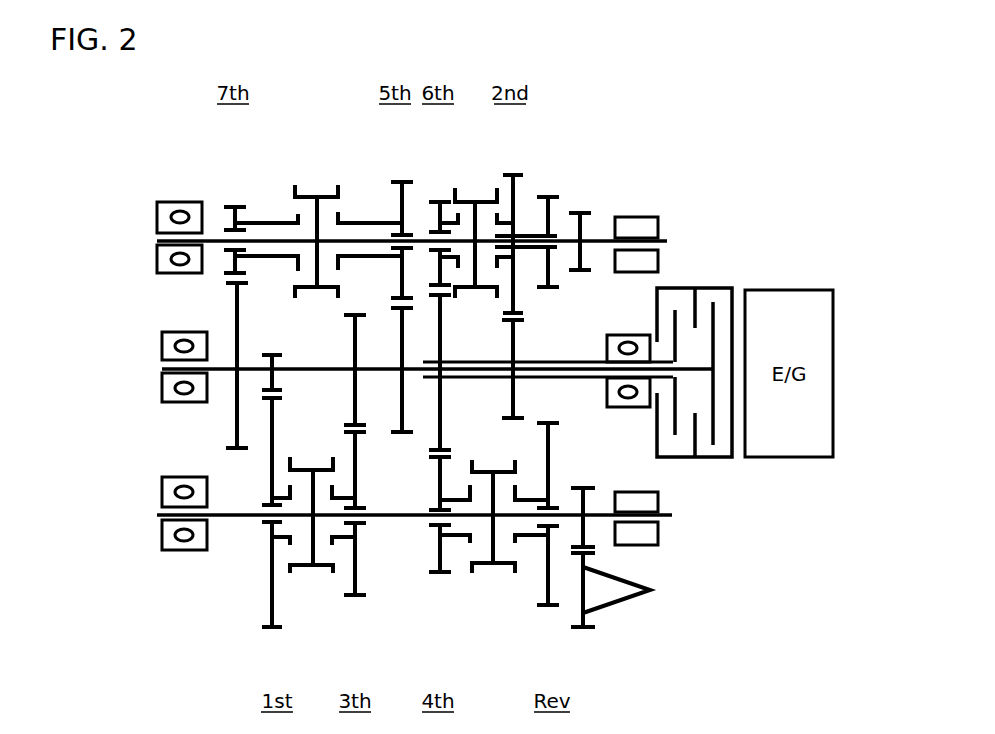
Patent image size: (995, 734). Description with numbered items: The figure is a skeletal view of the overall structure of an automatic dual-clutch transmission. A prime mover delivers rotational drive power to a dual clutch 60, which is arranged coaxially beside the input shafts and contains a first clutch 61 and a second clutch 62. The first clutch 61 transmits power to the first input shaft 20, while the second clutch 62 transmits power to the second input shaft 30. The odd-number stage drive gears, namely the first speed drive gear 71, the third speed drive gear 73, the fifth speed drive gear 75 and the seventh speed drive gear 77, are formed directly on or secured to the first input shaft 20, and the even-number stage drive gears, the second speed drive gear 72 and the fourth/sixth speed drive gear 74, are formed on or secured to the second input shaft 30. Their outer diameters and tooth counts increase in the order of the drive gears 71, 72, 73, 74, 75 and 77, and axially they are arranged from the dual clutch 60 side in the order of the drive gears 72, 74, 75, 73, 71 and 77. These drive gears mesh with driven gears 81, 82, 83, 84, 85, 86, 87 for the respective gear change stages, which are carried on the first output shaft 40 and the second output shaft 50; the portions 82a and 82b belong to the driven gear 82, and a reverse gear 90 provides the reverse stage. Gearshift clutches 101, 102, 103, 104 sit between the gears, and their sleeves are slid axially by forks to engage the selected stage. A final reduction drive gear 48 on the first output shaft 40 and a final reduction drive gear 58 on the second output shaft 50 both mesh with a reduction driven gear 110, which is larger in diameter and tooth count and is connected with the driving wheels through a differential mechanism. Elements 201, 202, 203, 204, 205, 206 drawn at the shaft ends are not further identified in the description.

The first input shaft 20 is at (160, 367).
The second input shaft 30 is at (565, 378).
The first output shaft 40 is at (228, 517).
The final reduction drive gear 48 is at (593, 533).
The second output shaft 50 is at (213, 238).
The final reduction drive gear 58 is at (590, 227).
The dual clutch 60 is at (713, 207).
The first clutch 61 is at (717, 322).
The second clutch 62 is at (680, 322).
The 1st speed drive gear 71 is at (267, 355).
The 2nd speed drive gear 72 is at (510, 392).
The 3rd speed drive gear 73 is at (353, 343).
The 4th/6th speed drive gear 74 is at (440, 390).
The 5th speed drive gear 75 is at (400, 343).
The 7th speed drive gear 77 is at (237, 328).
The driven gear 81 is at (267, 563).
The driven gear 82 is at (585, 138).
The second speed driven gear 82a is at (515, 197).
The reverse drive gear 82b is at (550, 210).
The driven gear 83 is at (368, 560).
The driven gear 84 is at (438, 550).
The driven gear 85 is at (392, 215).
The driven gear 86 is at (437, 202).
The driven gear 87 is at (242, 217).
The reverse gear 90 is at (547, 570).
The first gearshift clutch 101 is at (330, 563).
The second gearshift clutch 102 is at (472, 565).
The third gearshift clutch 103 is at (310, 187).
The fourth gearshift clutch 104 is at (475, 188).
The reduction driven gear 110 is at (580, 600).
The bearing of input shaft 201 is at (160, 389).
The bearing of input shaft (clutch side) 202 is at (630, 408).
The bearing of second counter shaft 203 is at (190, 552).
The bearing of second counter shaft (right) 204 is at (656, 546).
The bearing of first counter shaft 205 is at (183, 202).
The bearing of first counter shaft (right) 206 is at (647, 217).